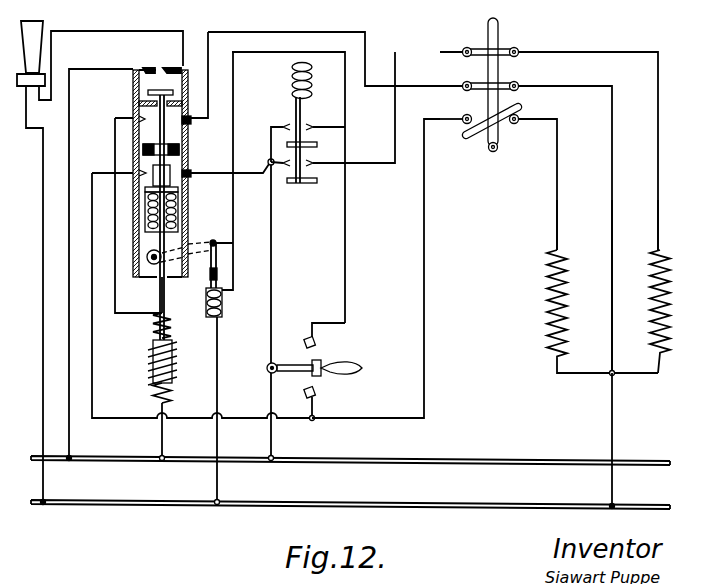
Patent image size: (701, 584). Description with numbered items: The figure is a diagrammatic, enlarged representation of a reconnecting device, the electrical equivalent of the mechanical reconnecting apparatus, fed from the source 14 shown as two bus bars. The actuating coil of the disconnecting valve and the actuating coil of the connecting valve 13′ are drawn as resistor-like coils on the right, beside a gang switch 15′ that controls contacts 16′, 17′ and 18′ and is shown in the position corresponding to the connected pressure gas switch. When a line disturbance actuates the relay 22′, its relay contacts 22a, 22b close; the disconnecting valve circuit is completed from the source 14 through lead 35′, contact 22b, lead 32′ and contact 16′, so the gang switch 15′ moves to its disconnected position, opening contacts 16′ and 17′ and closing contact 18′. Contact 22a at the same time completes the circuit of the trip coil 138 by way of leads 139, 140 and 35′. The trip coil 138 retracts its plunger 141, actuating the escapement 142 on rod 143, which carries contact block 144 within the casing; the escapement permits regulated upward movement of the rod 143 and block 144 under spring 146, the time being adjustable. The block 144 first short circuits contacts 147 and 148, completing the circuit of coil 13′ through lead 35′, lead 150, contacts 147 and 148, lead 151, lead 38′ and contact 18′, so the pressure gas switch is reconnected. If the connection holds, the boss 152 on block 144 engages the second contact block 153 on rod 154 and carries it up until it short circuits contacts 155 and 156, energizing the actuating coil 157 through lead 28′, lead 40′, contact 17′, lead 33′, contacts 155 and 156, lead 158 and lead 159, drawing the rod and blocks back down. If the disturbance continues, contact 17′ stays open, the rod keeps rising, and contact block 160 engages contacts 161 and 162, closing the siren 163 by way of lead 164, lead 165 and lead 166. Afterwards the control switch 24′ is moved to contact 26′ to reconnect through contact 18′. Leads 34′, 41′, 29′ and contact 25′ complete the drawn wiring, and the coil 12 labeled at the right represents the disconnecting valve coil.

The source 14 is at (490, 468).
The siren or signal device 163 is at (36, 34).
The lead 164 is at (42, 378).
The lead 165 is at (70, 422).
The lead 166 is at (135, 31).
The lead 33′ is at (320, 31).
The contact 155 is at (137, 118).
The contact 161 is at (148, 66).
The contact 162 is at (178, 67).
The contact block 160 is at (148, 92).
The rod 154 is at (192, 108).
The contact 156 is at (191, 122).
The second contact block 153 is at (181, 151).
The boss 152 is at (172, 174).
The contact 148 is at (192, 176).
The contact 147 is at (130, 172).
The contact block 144 is at (180, 191).
The spring 146 is at (148, 215).
The escapement 142 is at (155, 265).
The plunger 141 is at (217, 262).
The rod 143 is at (166, 318).
The trip coil 138 is at (222, 309).
The lead 139 is at (218, 352).
The lead 158 is at (153, 328).
The actuating coil 157 is at (170, 372).
The lead 151 is at (97, 384).
The lead 159 is at (165, 452).
The lead 140 is at (276, 63).
The relay 22′ is at (290, 100).
The relay contact 22a is at (308, 134).
The relay contact 22b is at (310, 168).
The lead 150 is at (247, 177).
The lead 32′ is at (397, 133).
The conductor 34′ is at (346, 284).
The contact 25′ is at (316, 344).
The control switch 24′ is at (327, 368).
The contact 26′ is at (316, 396).
The lead 35′ is at (274, 318).
The lead 38′ is at (427, 404).
The gang switch 15′ is at (487, 74).
The contact 16′ is at (526, 143).
The contact 17′ is at (503, 222).
The contact 18′ is at (498, 176).
The conductor 41′ is at (661, 205).
The conductor 29′ is at (560, 205).
The lead 40′ is at (614, 246).
The actuating coil of the connecting valve 13′ is at (546, 316).
The resistor 12 is at (676, 305).
The lead 28′ is at (614, 437).